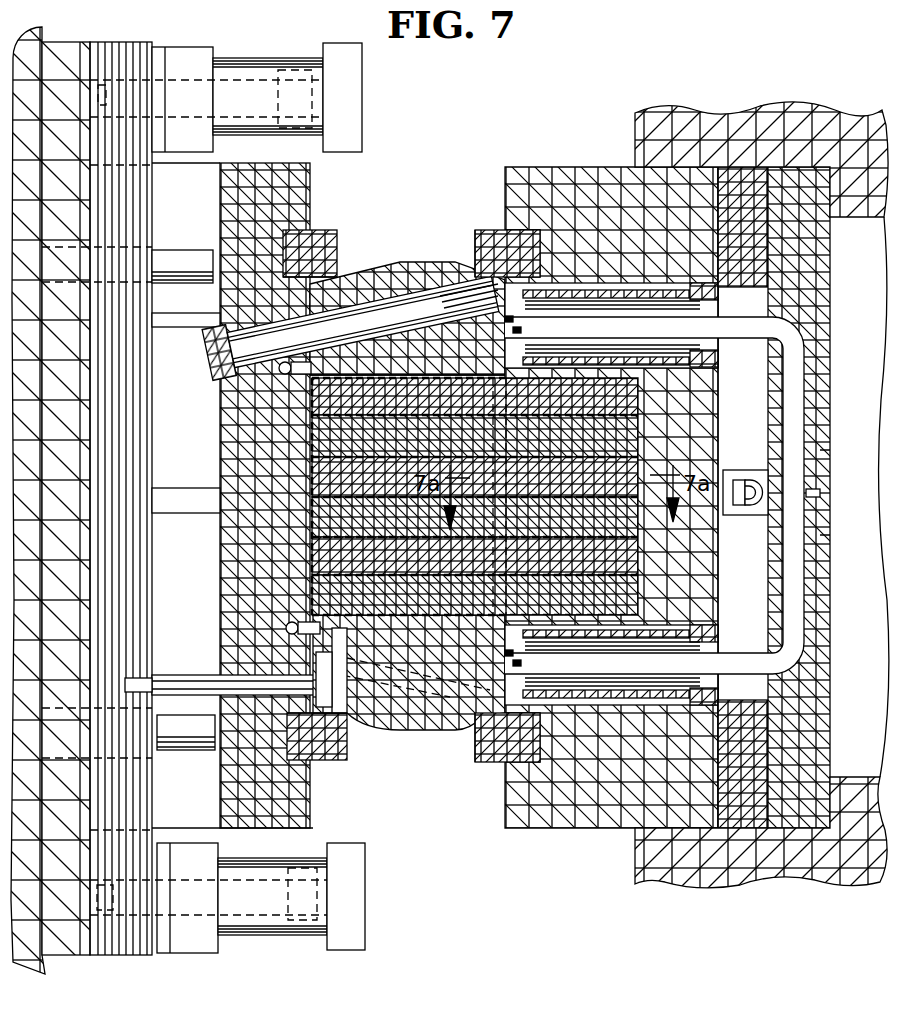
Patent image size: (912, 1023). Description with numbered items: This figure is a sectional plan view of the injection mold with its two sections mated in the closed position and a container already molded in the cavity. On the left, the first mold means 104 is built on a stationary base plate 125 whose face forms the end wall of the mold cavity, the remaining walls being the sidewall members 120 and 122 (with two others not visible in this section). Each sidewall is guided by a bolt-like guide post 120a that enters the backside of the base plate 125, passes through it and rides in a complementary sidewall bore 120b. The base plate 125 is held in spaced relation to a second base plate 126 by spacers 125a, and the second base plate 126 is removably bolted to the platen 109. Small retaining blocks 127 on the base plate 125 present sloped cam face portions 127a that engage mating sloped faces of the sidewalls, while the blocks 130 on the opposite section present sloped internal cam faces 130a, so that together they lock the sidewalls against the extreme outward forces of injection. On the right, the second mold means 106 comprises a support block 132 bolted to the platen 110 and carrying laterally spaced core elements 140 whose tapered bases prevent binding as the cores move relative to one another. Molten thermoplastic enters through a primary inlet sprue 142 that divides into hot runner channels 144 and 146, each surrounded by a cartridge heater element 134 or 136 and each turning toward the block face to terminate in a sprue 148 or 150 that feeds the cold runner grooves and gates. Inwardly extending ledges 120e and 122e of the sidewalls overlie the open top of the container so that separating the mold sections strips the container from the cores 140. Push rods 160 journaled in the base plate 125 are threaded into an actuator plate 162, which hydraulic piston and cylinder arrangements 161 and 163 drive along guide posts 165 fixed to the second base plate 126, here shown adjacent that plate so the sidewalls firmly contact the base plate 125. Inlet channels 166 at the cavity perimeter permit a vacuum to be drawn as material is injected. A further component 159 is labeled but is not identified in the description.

The first mold means 104 is at (335, 788).
The second mold means 106 is at (578, 830).
The platen 109 is at (35, 957).
The platen 110 is at (757, 863).
The sidewall member 120 is at (410, 277).
The guide post 120a is at (350, 300).
The sidewall bore 120b is at (459, 314).
The ledge 120e is at (497, 372).
The sidewall member 122 is at (410, 720).
The ledge 122e is at (500, 615).
The base plate 125 is at (265, 495).
The spacers 125a is at (232, 495).
The second base plate 126 is at (69, 48).
The retaining blocks 127 is at (335, 230).
The sloped cam face portion 127a is at (330, 230).
The blocks 130 is at (470, 232).
The sloped internal cam faces 130a is at (473, 233).
The support block 132 is at (512, 173).
The cartridge heater element 134 is at (565, 287).
The cartridge heater element 136 is at (583, 700).
The core elements 140 is at (475, 496).
The primary inlet sprue 142 is at (822, 495).
The hot runner channel 144 is at (797, 425).
The hot runner channel 146 is at (800, 603).
The sprue 148 is at (512, 300).
The sprue 150 is at (513, 665).
The bolt 159 is at (327, 647).
The push rod 160 is at (183, 313).
The hydraulic piston and cylinder arrangement 161 is at (266, 66).
The actuator plate 162 is at (128, 425).
The hydraulic piston and cylinder arrangement 163 is at (257, 928).
The guide posts 165 is at (167, 267).
The inlet channels 166 is at (284, 374).